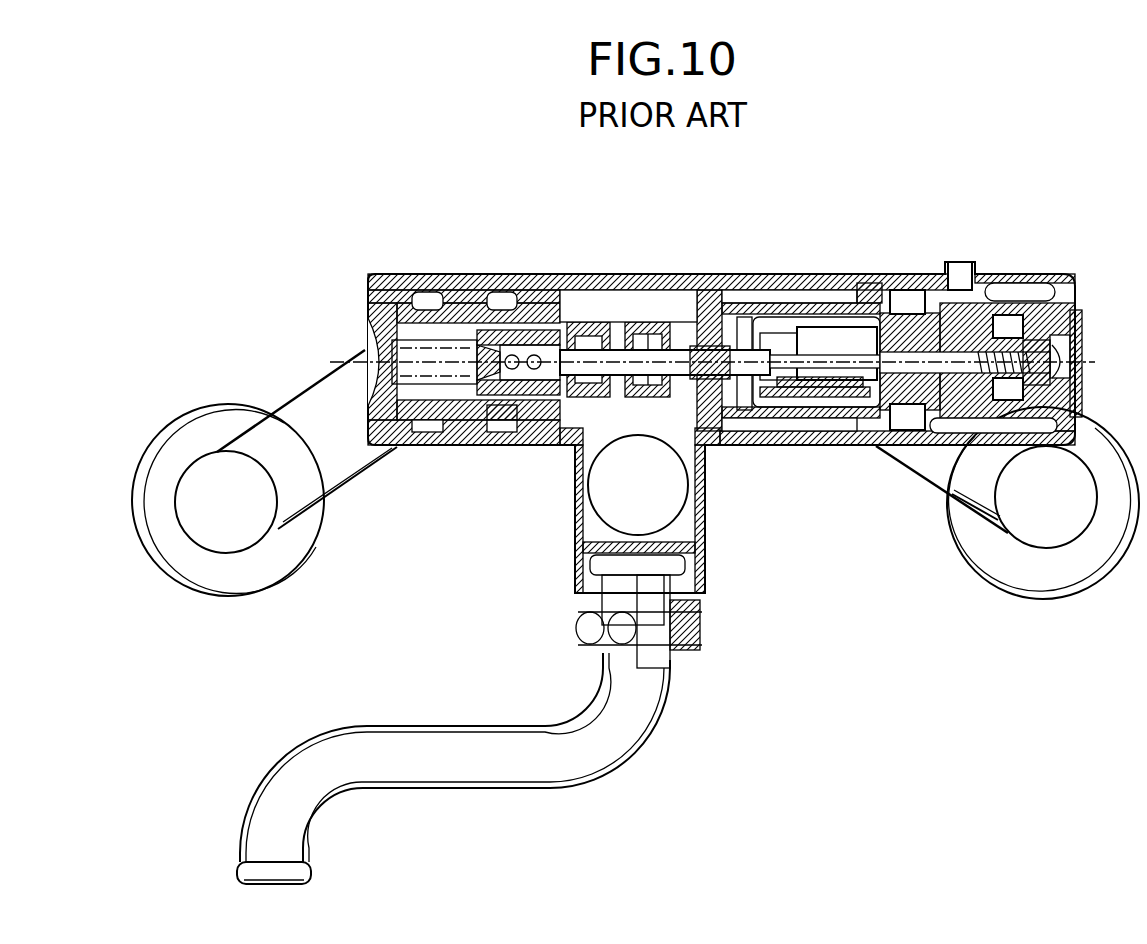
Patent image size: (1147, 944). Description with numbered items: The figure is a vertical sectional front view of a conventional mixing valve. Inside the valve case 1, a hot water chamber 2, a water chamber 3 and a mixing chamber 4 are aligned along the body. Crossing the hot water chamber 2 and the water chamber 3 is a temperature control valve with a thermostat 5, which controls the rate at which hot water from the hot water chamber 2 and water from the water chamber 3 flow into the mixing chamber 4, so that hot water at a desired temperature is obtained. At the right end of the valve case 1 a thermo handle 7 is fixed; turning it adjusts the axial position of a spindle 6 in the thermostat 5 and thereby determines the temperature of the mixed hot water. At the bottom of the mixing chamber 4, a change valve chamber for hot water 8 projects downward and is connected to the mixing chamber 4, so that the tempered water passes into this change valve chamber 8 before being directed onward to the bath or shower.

The valve case 1 is at (672, 274).
The hot water chamber 2 is at (425, 288).
The water chamber 3 is at (500, 290).
The mixing chamber 4 is at (607, 300).
The thermostat 5 is at (500, 418).
The spindle 6 is at (690, 345).
The thermo handle 7 is at (1062, 285).
The change valve chamber for hot water 8 is at (668, 510).